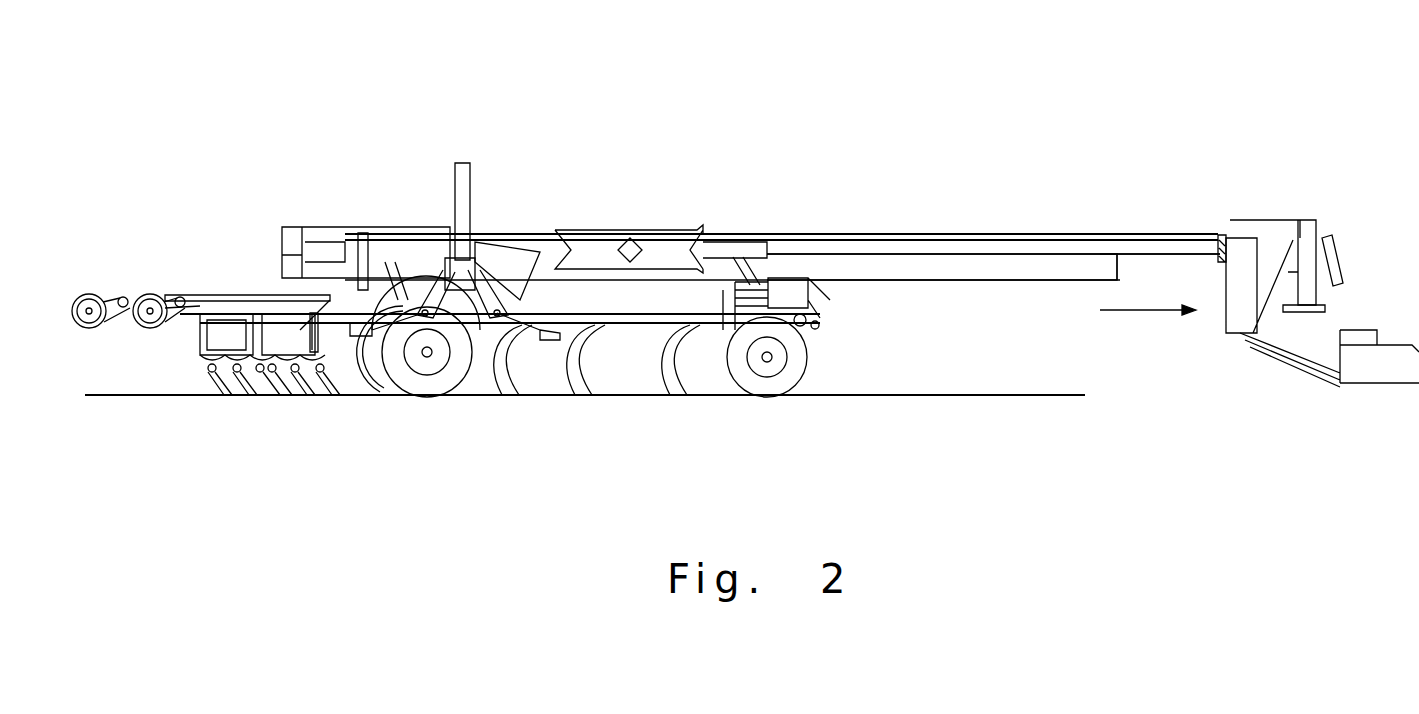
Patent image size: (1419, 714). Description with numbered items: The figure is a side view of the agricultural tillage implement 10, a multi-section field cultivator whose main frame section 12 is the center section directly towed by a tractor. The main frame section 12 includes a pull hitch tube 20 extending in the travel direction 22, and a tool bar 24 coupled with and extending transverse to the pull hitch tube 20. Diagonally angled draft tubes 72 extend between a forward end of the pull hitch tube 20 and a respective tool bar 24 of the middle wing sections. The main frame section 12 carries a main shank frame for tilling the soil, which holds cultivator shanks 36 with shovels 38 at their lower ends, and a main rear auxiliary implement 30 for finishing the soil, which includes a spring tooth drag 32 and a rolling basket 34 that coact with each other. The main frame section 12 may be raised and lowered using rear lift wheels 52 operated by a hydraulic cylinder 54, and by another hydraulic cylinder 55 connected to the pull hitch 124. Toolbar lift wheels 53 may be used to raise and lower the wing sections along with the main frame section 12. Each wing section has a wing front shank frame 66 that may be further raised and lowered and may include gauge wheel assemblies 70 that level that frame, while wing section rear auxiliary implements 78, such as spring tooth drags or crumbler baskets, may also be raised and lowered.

The agricultural tillage implement 10 is at (915, 145).
The main frame section 12 is at (800, 234).
The pull hitch tube 20 is at (958, 282).
The travel direction 22 is at (1140, 312).
The tool bar 24 is at (467, 268).
The main rear auxiliary implement 30 is at (103, 340).
The spring tooth drag 32 is at (290, 400).
The rolling basket 34 is at (148, 296).
The cultivator shanks 36 is at (690, 380).
The shovels 38 is at (603, 398).
The rear lift wheels 52 is at (362, 385).
The toolbar lift wheels 53 is at (430, 392).
The hydraulic cylinder 54 is at (470, 178).
The hydraulic cylinder 55 is at (1338, 262).
The wing front shank frame 66 is at (683, 330).
The gauge wheel assemblies 70 is at (800, 352).
The draft tubes 72 is at (1048, 240).
The wing section rear auxiliary implements 78 is at (165, 340).
The pull hitch 124 is at (1383, 378).